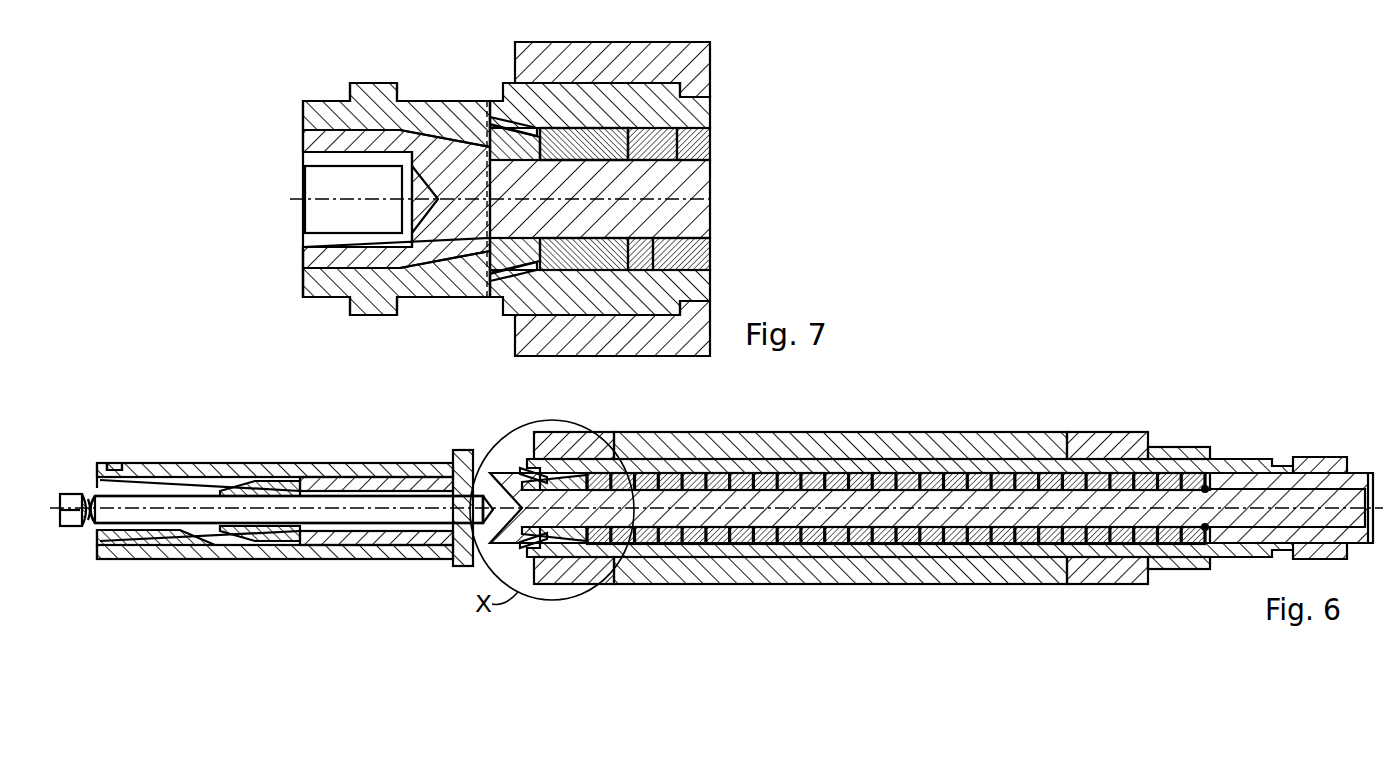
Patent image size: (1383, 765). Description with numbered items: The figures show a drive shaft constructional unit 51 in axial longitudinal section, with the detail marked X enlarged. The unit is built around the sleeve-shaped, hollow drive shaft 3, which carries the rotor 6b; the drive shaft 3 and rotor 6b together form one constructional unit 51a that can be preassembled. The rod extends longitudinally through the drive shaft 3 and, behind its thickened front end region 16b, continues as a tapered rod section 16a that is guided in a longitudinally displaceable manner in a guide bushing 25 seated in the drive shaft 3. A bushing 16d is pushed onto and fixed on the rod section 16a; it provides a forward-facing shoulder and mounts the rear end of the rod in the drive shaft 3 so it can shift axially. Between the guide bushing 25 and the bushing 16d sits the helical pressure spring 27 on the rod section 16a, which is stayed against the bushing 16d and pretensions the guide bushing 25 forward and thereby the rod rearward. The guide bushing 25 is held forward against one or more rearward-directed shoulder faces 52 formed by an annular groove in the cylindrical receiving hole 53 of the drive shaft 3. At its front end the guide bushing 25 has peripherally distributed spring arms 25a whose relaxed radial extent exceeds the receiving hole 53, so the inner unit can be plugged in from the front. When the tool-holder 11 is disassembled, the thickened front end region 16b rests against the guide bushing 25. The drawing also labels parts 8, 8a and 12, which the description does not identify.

In FIG. 7, the drive shaft 3 is at (700, 118).
In FIG. 6, the drive shaft 3 is at (693, 553).
In FIG. 7, the rotor 6b is at (703, 72).
In FIG. 6, the rotor 6b is at (845, 580).
In FIG. 6, the shaft 8 is at (185, 505).
In FIG. 6, the shaft end 8a is at (289, 472).
In FIG. 6, the tool-holder 11 is at (115, 463).
In FIG. 6, the coupling element 12 is at (92, 422).
In FIG. 7, the rod section 16a is at (690, 205).
In FIG. 7, the thickened front end region 16b is at (325, 140).
In FIG. 6, the bushing 16d is at (1228, 467).
In FIG. 7, the guide bushing 25 is at (585, 132).
In FIG. 7, the spring arms 25a is at (497, 126).
In FIG. 7, the pressure spring 27 is at (705, 152).
In FIG. 6, the constructional unit 51 is at (948, 428).
In FIG. 6, the constructional unit 51a is at (1045, 428).
In FIG. 7, the shoulder face 52 is at (483, 283).
In FIG. 6, the receiving hole 53 is at (760, 546).